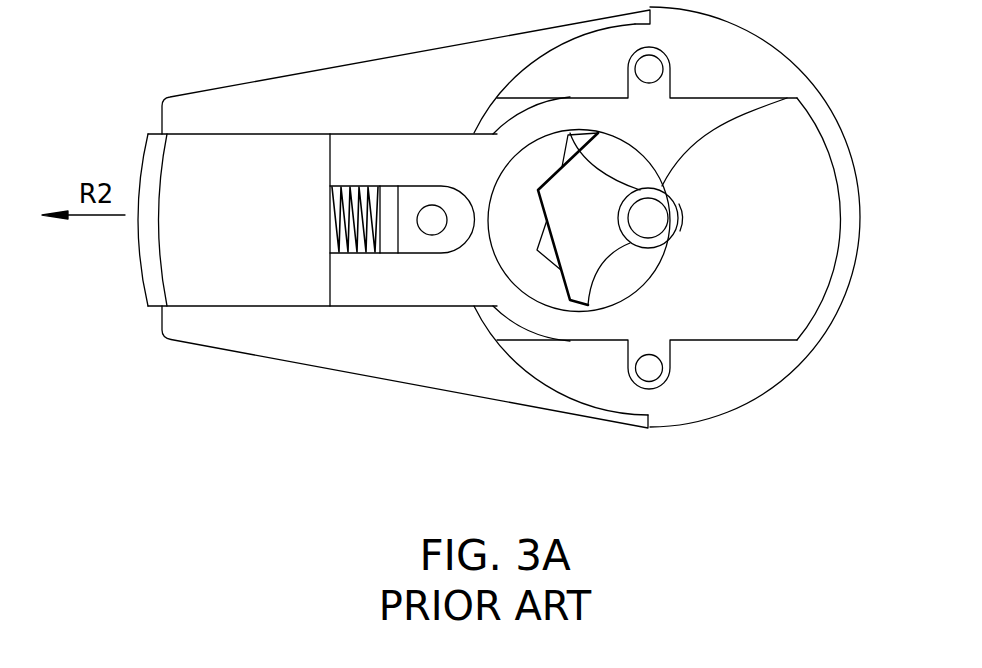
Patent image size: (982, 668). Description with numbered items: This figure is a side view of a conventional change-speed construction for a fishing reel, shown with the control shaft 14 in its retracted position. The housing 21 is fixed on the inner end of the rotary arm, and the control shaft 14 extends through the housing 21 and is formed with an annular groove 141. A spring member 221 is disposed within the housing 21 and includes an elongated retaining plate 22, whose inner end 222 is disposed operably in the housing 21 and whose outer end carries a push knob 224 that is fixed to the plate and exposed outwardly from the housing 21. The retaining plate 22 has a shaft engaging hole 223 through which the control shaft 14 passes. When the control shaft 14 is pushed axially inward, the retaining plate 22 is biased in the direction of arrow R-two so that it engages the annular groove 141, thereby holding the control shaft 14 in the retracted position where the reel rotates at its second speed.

The control shaft 14 is at (570, 133).
The annular groove 141 is at (589, 306).
The housing 21 is at (402, 368).
The retaining plate 22 is at (403, 148).
The spring member 221 is at (343, 257).
The inner end 222 is at (730, 297).
The shaft engaging hole 223 is at (787, 98).
The push knob 224 is at (217, 288).